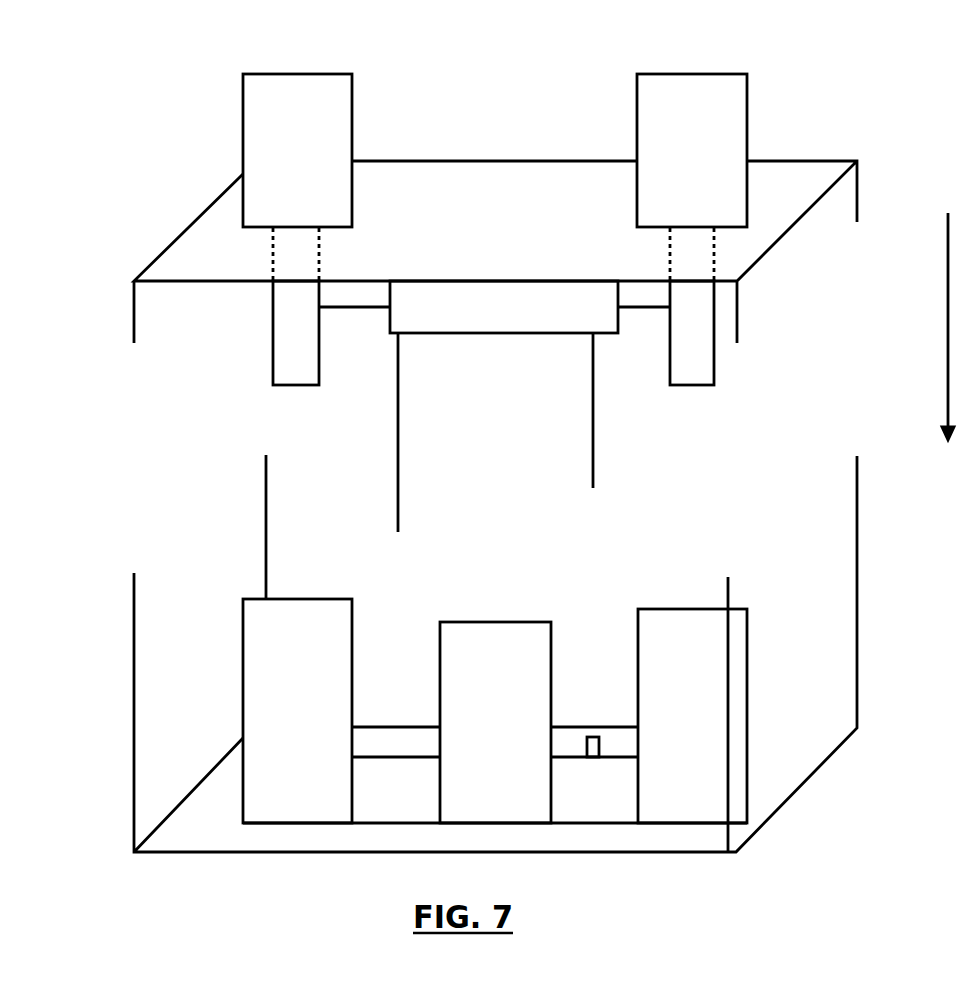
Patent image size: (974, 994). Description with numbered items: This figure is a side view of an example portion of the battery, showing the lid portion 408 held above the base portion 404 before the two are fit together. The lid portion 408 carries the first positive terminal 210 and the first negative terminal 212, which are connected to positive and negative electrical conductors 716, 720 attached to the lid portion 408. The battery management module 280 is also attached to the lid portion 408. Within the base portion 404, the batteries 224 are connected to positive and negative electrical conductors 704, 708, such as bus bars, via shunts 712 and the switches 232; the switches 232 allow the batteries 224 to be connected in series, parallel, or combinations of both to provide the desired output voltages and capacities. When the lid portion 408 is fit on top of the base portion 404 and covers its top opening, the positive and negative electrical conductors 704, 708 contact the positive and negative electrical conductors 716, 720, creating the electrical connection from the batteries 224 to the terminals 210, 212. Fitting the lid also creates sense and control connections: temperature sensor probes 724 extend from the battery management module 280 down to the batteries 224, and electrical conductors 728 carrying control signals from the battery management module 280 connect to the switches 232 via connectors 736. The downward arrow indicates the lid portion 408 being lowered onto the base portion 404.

The first positive terminal 210 is at (297, 74).
The first negative terminal 212 is at (692, 74).
The battery management module 280 is at (503, 281).
The lid portion 408 is at (155, 258).
The positive electrical conductor 716 is at (273, 333).
The negative electrical conductor 720 is at (714, 332).
The temperature sensor probes 724 is at (398, 433).
The electrical conductors 728 is at (593, 433).
The batteries 224 is at (495, 540).
The positive electrical conductor 704 is at (243, 613).
The negative electrical conductor 708 is at (748, 615).
The shunts 712 is at (379, 757).
The connectors 736 is at (596, 737).
The base portion 404 is at (133, 790).
The switches 232 is at (595, 823).